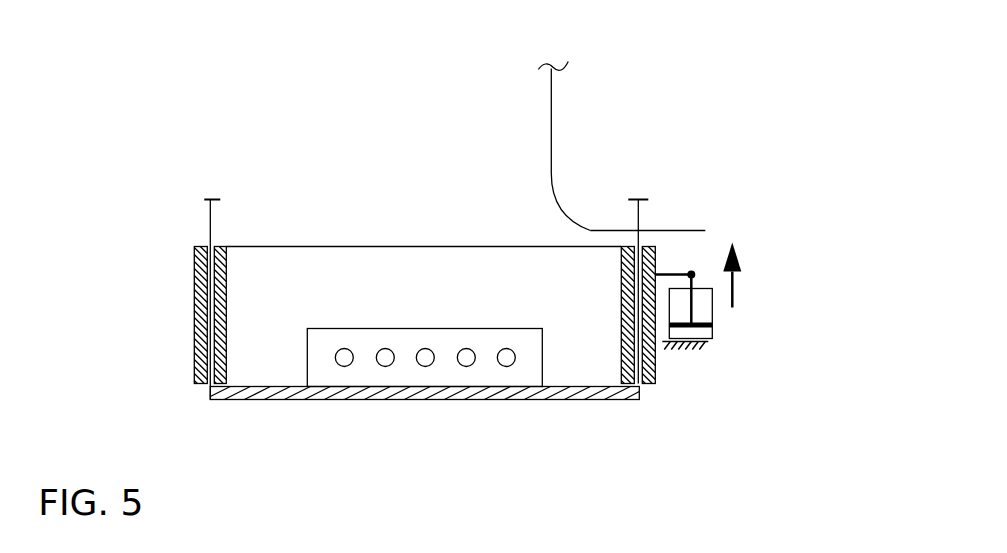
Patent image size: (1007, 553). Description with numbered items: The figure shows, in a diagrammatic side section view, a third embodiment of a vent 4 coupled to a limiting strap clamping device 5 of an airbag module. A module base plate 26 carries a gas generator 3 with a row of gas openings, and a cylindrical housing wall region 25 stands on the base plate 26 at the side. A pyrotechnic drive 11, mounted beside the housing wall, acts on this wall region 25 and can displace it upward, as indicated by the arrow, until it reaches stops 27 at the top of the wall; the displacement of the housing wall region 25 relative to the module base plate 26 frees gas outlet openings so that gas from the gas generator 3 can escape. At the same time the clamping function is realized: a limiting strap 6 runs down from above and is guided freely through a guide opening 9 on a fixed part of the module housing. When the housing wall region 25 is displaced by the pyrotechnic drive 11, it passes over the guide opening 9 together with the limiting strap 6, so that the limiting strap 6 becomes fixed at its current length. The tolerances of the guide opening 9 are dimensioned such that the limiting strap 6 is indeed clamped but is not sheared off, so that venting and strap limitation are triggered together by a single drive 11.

The gas generator 3 is at (487, 370).
The vent 4 is at (268, 115).
The limiting strap clamping device 5 is at (708, 129).
The limiting strap 6 is at (551, 124).
The guide opening 9 is at (658, 218).
The pyrotechnic drive 11 is at (708, 315).
The cylindrical housing wall region 25 is at (202, 305).
The module base plate 26 is at (352, 393).
The stops 27 is at (205, 199).